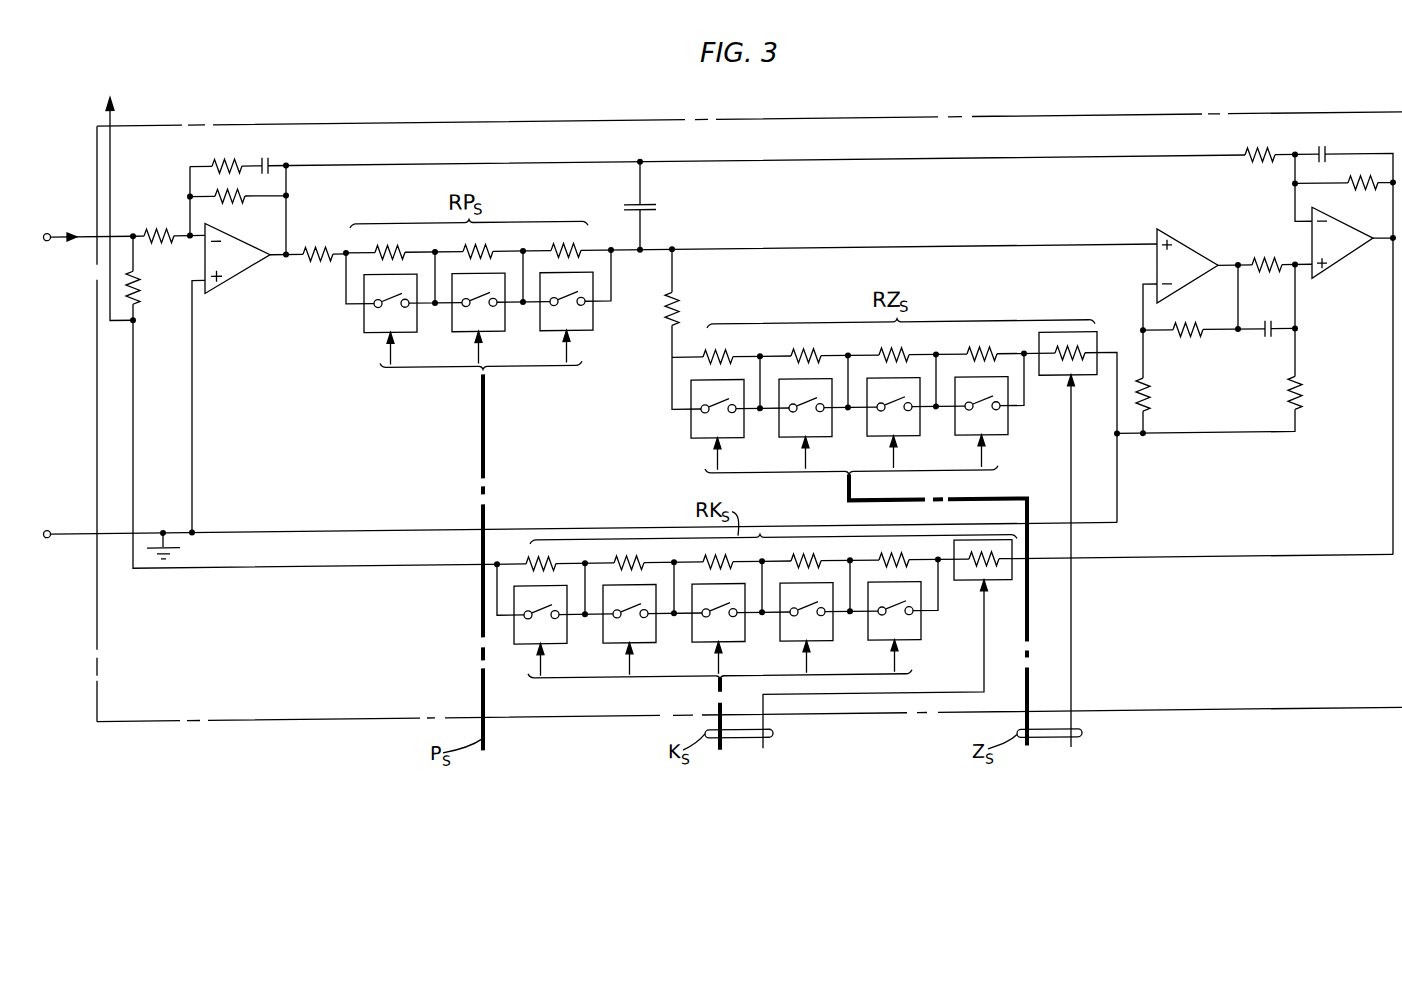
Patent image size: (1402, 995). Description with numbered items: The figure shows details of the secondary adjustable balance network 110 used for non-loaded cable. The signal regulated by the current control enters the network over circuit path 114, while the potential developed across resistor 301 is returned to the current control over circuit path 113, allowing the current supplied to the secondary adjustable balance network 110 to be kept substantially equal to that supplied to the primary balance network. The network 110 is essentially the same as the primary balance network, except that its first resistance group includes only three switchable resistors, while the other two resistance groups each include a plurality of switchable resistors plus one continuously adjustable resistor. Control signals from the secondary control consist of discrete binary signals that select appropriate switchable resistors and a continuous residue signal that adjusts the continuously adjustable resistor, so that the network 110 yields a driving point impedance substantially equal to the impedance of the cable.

The secondary adjustable balance network 110 is at (1278, 119).
The circuit path 113 is at (107, 110).
The circuit path 114 is at (59, 229).
The resistor 301 is at (139, 281).